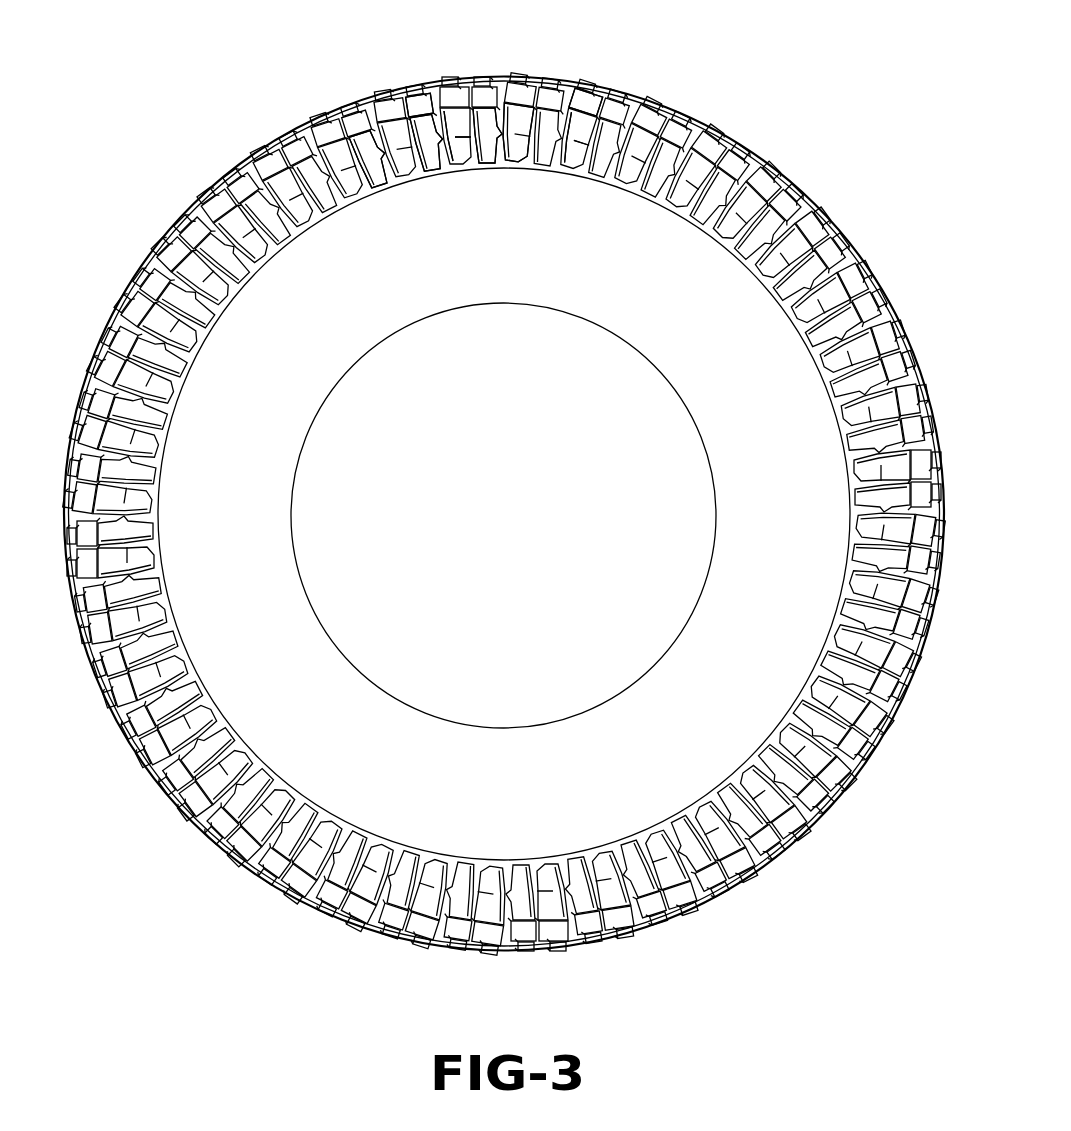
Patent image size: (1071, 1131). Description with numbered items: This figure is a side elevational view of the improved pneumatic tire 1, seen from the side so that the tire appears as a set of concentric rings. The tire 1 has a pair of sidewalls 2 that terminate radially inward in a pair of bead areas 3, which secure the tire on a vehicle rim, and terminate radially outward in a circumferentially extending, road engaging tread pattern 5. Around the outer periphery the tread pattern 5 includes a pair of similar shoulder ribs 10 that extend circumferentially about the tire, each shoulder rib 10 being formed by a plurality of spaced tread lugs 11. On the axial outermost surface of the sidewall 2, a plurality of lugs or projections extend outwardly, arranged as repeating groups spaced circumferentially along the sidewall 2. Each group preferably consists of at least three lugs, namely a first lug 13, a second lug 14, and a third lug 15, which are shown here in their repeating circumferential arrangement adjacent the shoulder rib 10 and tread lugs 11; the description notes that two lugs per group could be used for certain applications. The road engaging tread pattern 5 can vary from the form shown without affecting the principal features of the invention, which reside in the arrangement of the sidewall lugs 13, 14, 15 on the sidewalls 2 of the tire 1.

The pneumatic tire 1 is at (657, 66).
The sidewall 2 is at (785, 506).
The bead area 3 is at (717, 561).
The tread pattern 5 is at (723, 135).
The shoulder rib 10 is at (384, 90).
The tread lug 11 is at (447, 113).
The first lug 13 is at (462, 150).
The second lug 14 is at (413, 100).
The third lug 15 is at (418, 165).